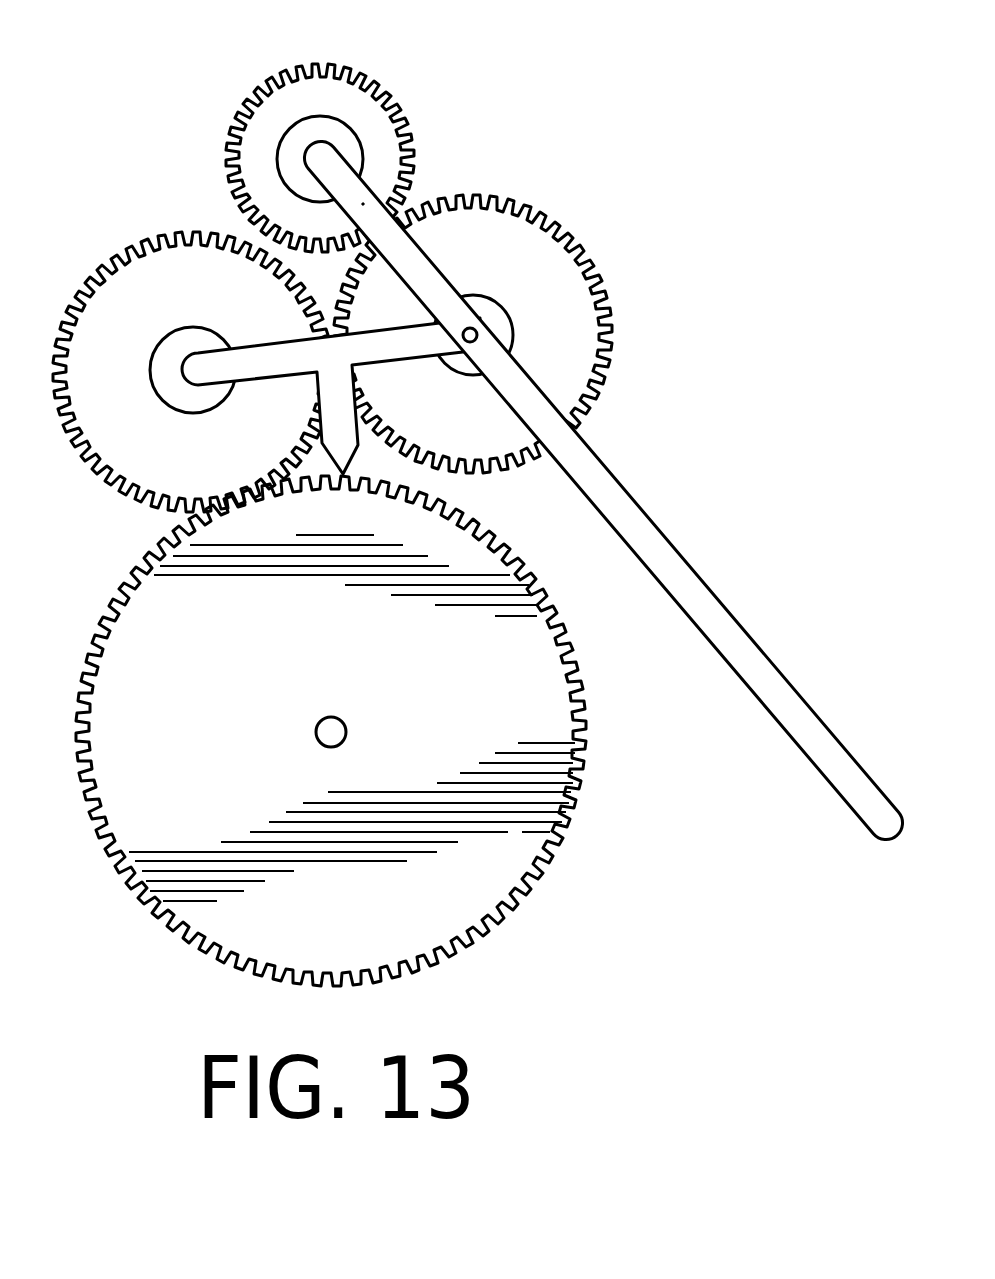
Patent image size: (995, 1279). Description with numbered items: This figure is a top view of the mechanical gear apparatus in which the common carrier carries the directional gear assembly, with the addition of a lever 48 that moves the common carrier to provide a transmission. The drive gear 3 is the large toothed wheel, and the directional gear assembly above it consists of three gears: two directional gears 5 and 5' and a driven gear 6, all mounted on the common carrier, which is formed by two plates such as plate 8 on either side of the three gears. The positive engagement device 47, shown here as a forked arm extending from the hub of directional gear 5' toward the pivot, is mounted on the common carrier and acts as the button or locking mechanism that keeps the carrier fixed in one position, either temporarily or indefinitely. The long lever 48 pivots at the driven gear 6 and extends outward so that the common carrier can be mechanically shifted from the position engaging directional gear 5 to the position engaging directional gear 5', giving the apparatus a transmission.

The drive gear 3 is at (479, 882).
The directional gear 5 is at (518, 332).
The directional gear 5' is at (193, 297).
The driven gear 6 is at (390, 143).
The plate 8 is at (362, 203).
The positive engagement device 47 is at (345, 446).
The lever 48 is at (710, 603).